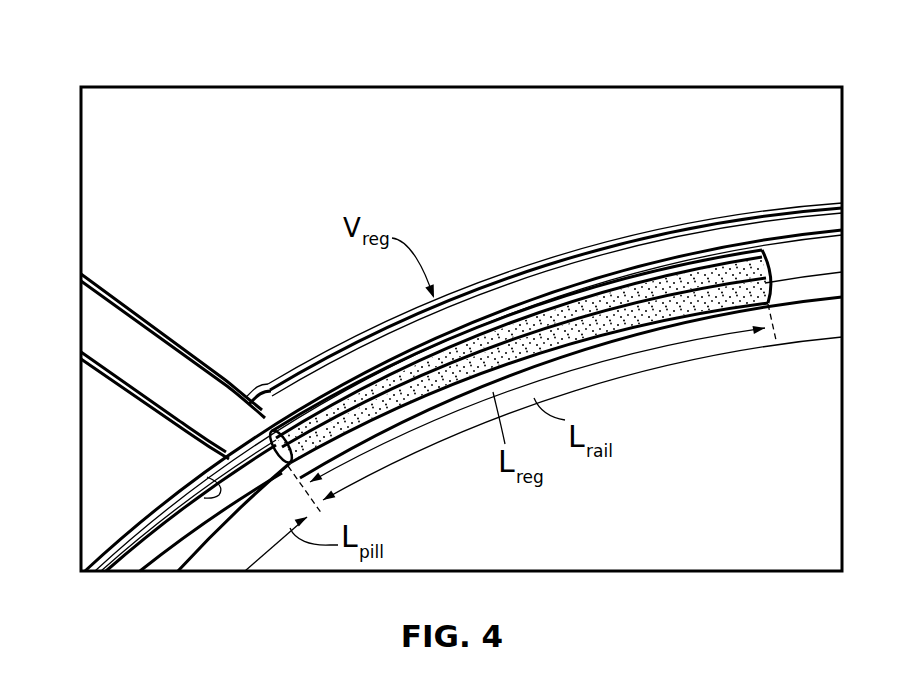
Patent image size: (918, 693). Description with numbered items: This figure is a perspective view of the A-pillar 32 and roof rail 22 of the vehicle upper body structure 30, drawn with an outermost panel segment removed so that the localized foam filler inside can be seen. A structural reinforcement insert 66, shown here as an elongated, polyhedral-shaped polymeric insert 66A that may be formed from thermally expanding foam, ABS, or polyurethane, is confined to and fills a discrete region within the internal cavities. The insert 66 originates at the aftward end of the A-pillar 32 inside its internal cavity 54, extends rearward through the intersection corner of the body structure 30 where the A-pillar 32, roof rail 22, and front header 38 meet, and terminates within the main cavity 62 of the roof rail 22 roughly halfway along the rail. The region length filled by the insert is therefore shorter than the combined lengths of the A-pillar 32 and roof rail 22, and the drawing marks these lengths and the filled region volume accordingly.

The body structure 30 is at (280, 92).
The roof rail 22 is at (624, 244).
The internal cavity 54 is at (205, 472).
The A-pillar 32 is at (158, 505).
The front header 38 is at (128, 310).
The structural reinforcement insert 66 is at (562, 292).
The polymeric insert 66A is at (527, 356).
The main cavity 62 is at (793, 248).